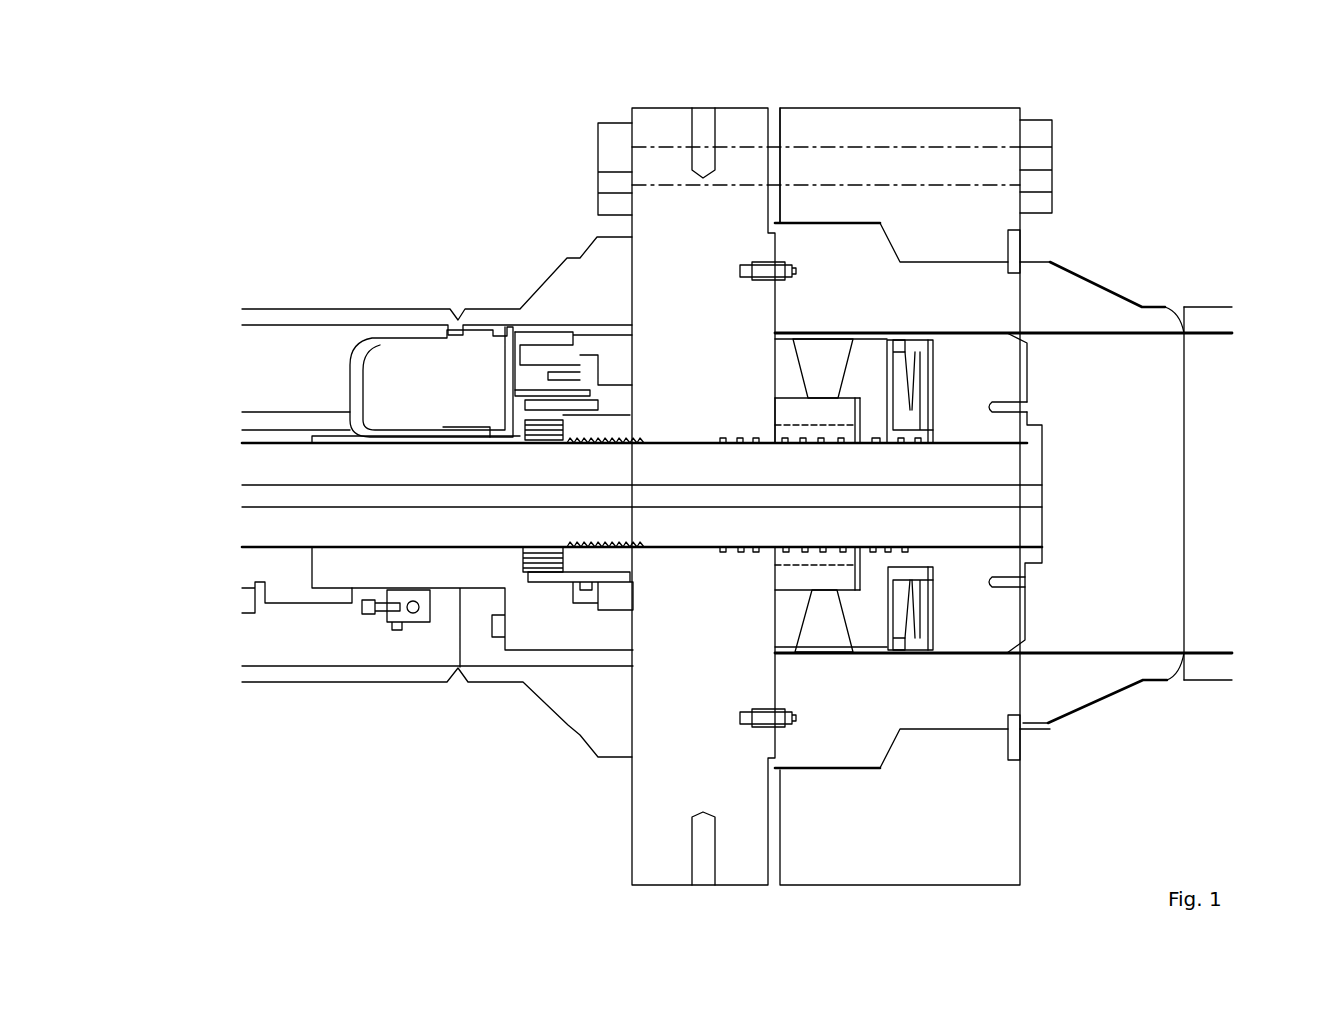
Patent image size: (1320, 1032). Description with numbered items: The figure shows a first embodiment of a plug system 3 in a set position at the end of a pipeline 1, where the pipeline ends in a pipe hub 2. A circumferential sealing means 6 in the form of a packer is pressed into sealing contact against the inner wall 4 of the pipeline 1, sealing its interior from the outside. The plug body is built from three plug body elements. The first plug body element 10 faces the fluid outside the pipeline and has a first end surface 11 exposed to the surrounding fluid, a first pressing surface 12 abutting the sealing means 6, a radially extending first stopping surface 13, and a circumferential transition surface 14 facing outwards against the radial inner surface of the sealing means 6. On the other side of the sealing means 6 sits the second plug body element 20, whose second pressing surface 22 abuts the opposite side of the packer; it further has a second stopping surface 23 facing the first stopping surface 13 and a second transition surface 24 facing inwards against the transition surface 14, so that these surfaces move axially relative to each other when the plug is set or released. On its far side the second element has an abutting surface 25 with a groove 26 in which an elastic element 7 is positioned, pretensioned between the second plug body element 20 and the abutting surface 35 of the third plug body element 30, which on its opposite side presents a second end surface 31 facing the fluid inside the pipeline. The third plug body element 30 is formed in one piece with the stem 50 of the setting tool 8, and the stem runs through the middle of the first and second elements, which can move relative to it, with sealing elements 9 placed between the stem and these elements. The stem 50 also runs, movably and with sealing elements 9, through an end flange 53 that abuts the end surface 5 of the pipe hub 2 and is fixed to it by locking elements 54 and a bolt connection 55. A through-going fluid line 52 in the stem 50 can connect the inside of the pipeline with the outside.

The pipeline 1 is at (1152, 317).
The pipe hub 2 is at (825, 362).
The plug system 3 is at (1065, 388).
The inner wall 4 is at (1108, 653).
The end surface 5 is at (776, 223).
The sealing means 6 is at (837, 277).
The elastic element 7 is at (905, 333).
The setting tool 8 is at (397, 278).
The sealing elements 9 is at (843, 553).
The first plug body element 10 is at (788, 377).
The first end surface 11 is at (772, 357).
The first pressing surface 12 is at (807, 385).
The first stopping surface 13 is at (775, 425).
The transition surface 14 is at (810, 397).
The second plug body element 20 is at (1023, 237).
The second pressing surface 22 is at (887, 410).
The second stopping surface 23 is at (876, 444).
The second transition surface 24 is at (908, 443).
The abutting surface 25 is at (937, 433).
The groove 26 is at (867, 365).
The third plug body element 30 is at (997, 367).
The second end surface 31 is at (1027, 372).
The abutting surface 35 is at (933, 395).
The stem 50 is at (340, 460).
The fluid line 52 is at (308, 495).
The end flange 53 is at (672, 763).
The locking elements 54 is at (805, 120).
The bolt connection 55 is at (608, 160).